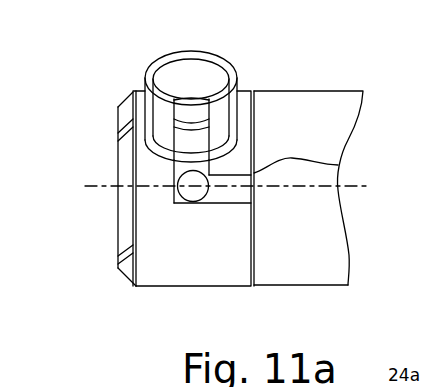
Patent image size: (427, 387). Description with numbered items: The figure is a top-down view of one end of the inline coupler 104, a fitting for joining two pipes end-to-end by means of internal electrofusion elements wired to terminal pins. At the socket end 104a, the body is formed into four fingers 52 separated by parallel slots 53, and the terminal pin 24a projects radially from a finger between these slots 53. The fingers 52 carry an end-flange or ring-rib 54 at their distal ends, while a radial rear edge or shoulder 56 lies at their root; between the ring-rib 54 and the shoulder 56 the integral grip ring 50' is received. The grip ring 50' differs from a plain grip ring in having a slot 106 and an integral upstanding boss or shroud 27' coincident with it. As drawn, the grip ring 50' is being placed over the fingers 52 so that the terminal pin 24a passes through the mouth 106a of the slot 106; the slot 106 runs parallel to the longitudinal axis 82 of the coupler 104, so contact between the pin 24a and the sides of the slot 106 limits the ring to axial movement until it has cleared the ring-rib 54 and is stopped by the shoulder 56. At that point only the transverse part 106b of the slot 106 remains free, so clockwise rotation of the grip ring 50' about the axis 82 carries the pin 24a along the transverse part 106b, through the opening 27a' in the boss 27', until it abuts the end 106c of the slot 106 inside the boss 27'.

The inline coupler 104 is at (338, 85).
The socket end 104a is at (118, 147).
The ring-rib 54 is at (135, 91).
The fingers 52 is at (122, 226).
The slots 53 is at (120, 251).
The integral grip ring 50' is at (169, 211).
The rear edge 56 is at (272, 287).
The boss 27' is at (219, 80).
The opening 27a' is at (231, 110).
The end of the slot 106c is at (190, 122).
The transverse part 106b is at (176, 170).
The slot 106 is at (231, 204).
The mouth 106a is at (338, 165).
The terminal pin 24a is at (191, 203).
The longitudinal axis 82 is at (370, 186).